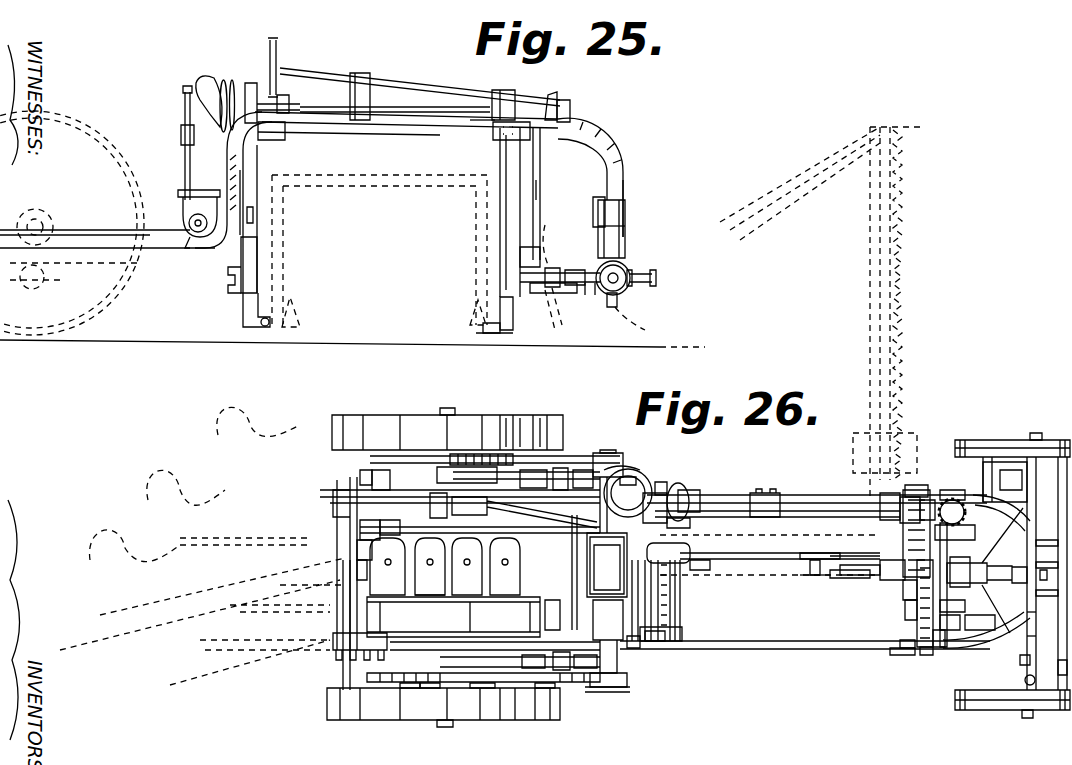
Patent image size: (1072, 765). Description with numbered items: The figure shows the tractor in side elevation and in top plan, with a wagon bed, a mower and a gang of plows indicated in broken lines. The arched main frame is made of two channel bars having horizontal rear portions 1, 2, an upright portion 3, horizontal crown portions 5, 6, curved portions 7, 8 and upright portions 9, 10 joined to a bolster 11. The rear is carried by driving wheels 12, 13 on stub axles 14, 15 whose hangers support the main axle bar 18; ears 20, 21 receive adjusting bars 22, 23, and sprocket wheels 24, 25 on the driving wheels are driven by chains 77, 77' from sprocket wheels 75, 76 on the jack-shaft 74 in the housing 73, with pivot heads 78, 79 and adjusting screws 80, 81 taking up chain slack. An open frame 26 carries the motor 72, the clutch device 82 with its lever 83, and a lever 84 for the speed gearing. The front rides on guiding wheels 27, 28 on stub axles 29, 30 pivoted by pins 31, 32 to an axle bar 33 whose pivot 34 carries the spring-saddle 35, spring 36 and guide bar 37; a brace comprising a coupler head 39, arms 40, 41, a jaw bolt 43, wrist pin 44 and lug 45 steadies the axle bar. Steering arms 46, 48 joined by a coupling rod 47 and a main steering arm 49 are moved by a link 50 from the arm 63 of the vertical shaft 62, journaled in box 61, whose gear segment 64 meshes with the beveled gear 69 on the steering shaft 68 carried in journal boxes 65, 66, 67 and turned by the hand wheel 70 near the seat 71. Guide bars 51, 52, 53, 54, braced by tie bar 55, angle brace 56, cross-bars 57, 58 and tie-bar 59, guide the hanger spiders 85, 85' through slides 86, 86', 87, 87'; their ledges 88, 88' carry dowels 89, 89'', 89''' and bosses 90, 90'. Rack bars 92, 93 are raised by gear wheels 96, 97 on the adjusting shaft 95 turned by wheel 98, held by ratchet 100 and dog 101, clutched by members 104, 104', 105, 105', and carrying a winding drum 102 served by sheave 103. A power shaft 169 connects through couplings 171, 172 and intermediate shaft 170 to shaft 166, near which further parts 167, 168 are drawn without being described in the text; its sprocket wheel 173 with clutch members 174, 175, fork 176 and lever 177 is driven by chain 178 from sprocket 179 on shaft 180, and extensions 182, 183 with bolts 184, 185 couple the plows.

In FIG. 25, the horizontal rear portion 1 is at (86, 232).
In FIG. 26, the horizontal rear portion 1 is at (412, 688).
In FIG. 26, the horizontal rear portion 2 is at (420, 490).
In FIG. 25, the upright portion 3 is at (226, 170).
In FIG. 26, the upright portion 3 is at (636, 650).
In FIG. 25, the horizontal crown portion 5 is at (388, 126).
In FIG. 26, the horizontal crown portion 5 is at (750, 650).
In FIG. 26, the horizontal crown portion 6 is at (792, 495).
In FIG. 25, the curved portion 7 is at (608, 152).
In FIG. 26, the curved portion 7 is at (1010, 645).
In FIG. 26, the curved portion 8 is at (1011, 485).
In FIG. 25, the upright portion 9 is at (623, 193).
In FIG. 26, the upright portion 9 is at (1036, 620).
In FIG. 26, the upright portion 10 is at (1015, 567).
In FIG. 25, the bolster 11 is at (593, 208).
In FIG. 26, the bolster 11 is at (1046, 550).
In FIG. 26, the driving wheel 12 is at (360, 720).
In FIG. 26, the driving wheel 13 is at (393, 416).
In FIG. 26, the stub axle 14 is at (445, 727).
In FIG. 26, the stub axle 15 is at (450, 408).
In FIG. 26, the main axle bar 18 is at (445, 626).
In FIG. 26, the ear 20 is at (482, 688).
In FIG. 26, the ear 21 is at (480, 456).
In FIG. 26, the adjusting bar 22 is at (545, 688).
In FIG. 26, the adjusting bar 23 is at (512, 454).
In FIG. 26, the sprocket wheel 24 is at (425, 688).
In FIG. 26, the sprocket wheel 25 is at (378, 470).
In FIG. 26, the open frame 26 is at (490, 657).
In FIG. 26, the guiding wheel 27 is at (975, 710).
In FIG. 26, the guiding wheel 28 is at (995, 440).
In FIG. 25, the stub axle 29 is at (622, 292).
In FIG. 26, the stub axle 29 is at (1026, 718).
In FIG. 26, the stub axle 30 is at (1041, 427).
In FIG. 25, the vertical pivot pin 31 is at (610, 307).
In FIG. 26, the vertical pivot pin 31 is at (1024, 680).
In FIG. 26, the vertical pivot pin 32 is at (1037, 480).
In FIG. 25, the axle bar 33 is at (620, 312).
In FIG. 26, the axle bar 33 is at (1020, 658).
In FIG. 26, the central horizontal pivot 34 is at (1046, 568).
In FIG. 26, the spring-saddle 35 is at (1049, 600).
In FIG. 25, the spring 36 is at (625, 240).
In FIG. 25, the guide bar 37 is at (598, 250).
In FIG. 26, the guide bar 37 is at (1015, 583).
In FIG. 25, the coupler head 39 is at (552, 268).
In FIG. 26, the coupler head 39 is at (961, 611).
In FIG. 25, the arm 40 is at (578, 268).
In FIG. 26, the arm 40 is at (985, 625).
In FIG. 26, the arm 41 is at (964, 565).
In FIG. 26, the jaw bolt 43 is at (942, 603).
In FIG. 25, the wrist pin 44 is at (550, 293).
In FIG. 26, the wrist pin 44 is at (910, 620).
In FIG. 25, the lug 45 is at (520, 278).
In FIG. 26, the lug 45 is at (905, 600).
In FIG. 25, the steering arm 46 is at (633, 283).
In FIG. 26, the steering arm 46 is at (1052, 665).
In FIG. 25, the coupling rod 47 is at (656, 278).
In FIG. 26, the coupling rod 47 is at (1036, 640).
In FIG. 26, the steering arm 48 is at (1060, 440).
In FIG. 25, the main steering arm 49 is at (597, 296).
In FIG. 26, the main steering arm 49 is at (1010, 460).
In FIG. 25, the link 50 is at (588, 296).
In FIG. 26, the link 50 is at (1005, 482).
In FIG. 25, the guide bar 51 is at (258, 252).
In FIG. 26, the guide bar 51 is at (682, 660).
In FIG. 25, the guide bar 52 is at (500, 240).
In FIG. 26, the guide bar 52 is at (925, 655).
In FIG. 26, the guide bar 53 is at (663, 482).
In FIG. 26, the guide bar 54 is at (928, 500).
In FIG. 25, the tie bar 55 is at (232, 292).
In FIG. 25, the angle brace 56 is at (255, 207).
In FIG. 26, the cross-bar 57 is at (680, 648).
In FIG. 26, the cross-bar 58 is at (905, 575).
In FIG. 25, the tie-bar 59 is at (520, 257).
In FIG. 26, the tie-bar 59 is at (960, 625).
In FIG. 25, the journal box 61 is at (540, 240).
In FIG. 25, the shaft 62 is at (535, 180).
In FIG. 25, the arm 63 is at (546, 300).
In FIG. 26, the arm 63 is at (965, 525).
In FIG. 25, the gear segment 64 is at (541, 140).
In FIG. 26, the gear segment 64 is at (955, 500).
In FIG. 25, the journal box 65 is at (570, 102).
In FIG. 26, the journal box 65 is at (950, 540).
In FIG. 25, the journal box 66 is at (360, 73).
In FIG. 26, the journal box 66 is at (758, 493).
In FIG. 25, the journal box 67 is at (502, 90).
In FIG. 26, the journal box 67 is at (908, 497).
In FIG. 25, the steering shaft 68 is at (420, 83).
In FIG. 26, the steering shaft 68 is at (815, 553).
In FIG. 25, the beveled gear wheel 69 is at (548, 95).
In FIG. 26, the beveled gear wheel 69 is at (955, 490).
In FIG. 25, the hand steering wheel 70 is at (270, 40).
In FIG. 26, the hand steering wheel 70 is at (683, 483).
In FIG. 25, the seat 71 is at (208, 84).
In FIG. 26, the seat 71 is at (641, 470).
In FIG. 26, the motor 72 is at (350, 580).
In FIG. 25, the housing 73 is at (182, 222).
In FIG. 26, the housing 73 is at (552, 612).
In FIG. 25, the jack-shaft 74 is at (194, 234).
In FIG. 26, the jack-shaft 74 is at (607, 450).
In FIG. 25, the sprocket wheel 75 is at (208, 248).
In FIG. 26, the sprocket wheel 75 is at (625, 686).
In FIG. 26, the sprocket wheel 76 is at (628, 477).
In FIG. 26, the sprocket chain 77 is at (483, 716).
In FIG. 26, the sprocket chain 77' is at (500, 436).
In FIG. 26, the pivot head 78 is at (630, 690).
In FIG. 26, the pivot head 79 is at (596, 453).
In FIG. 26, the adjusting screw 80 is at (562, 670).
In FIG. 26, the adjusting screw 81 is at (577, 470).
In FIG. 26, the clutch device 82 is at (515, 657).
In FIG. 26, the controlling lever 83 is at (505, 566).
In FIG. 25, the lever 84 is at (183, 88).
In FIG. 26, the lever 84 is at (607, 537).
In FIG. 26, the spider 85 is at (685, 600).
In FIG. 26, the spider 85' is at (854, 587).
In FIG. 25, the slide 86 is at (237, 317).
In FIG. 26, the slide 86 is at (660, 655).
In FIG. 26, the slide 86' is at (927, 455).
In FIG. 26, the slide 87 is at (702, 470).
In FIG. 25, the slide 87' is at (475, 303).
In FIG. 26, the slide 87' is at (949, 653).
In FIG. 25, the ledge 88 is at (352, 353).
In FIG. 26, the ledge 88 is at (697, 632).
In FIG. 25, the ledge 88' is at (500, 345).
In FIG. 26, the ledge 88' is at (865, 685).
In FIG. 25, the dowel 89 is at (282, 344).
In FIG. 26, the dowel 89 is at (687, 600).
In FIG. 26, the projection 89'' is at (855, 536).
In FIG. 25, the projection 89''' is at (475, 354).
In FIG. 26, the projection 89''' is at (884, 675).
In FIG. 25, the boss 90 is at (295, 300).
In FIG. 25, the boss 90' is at (454, 312).
In FIG. 25, the rack bar 92 is at (250, 83).
In FIG. 26, the rack bar 92 is at (608, 631).
In FIG. 25, the rack bar 93 is at (500, 138).
In FIG. 26, the rack bar 93 is at (816, 575).
In FIG. 25, the adjusting and supporting shaft 95 is at (388, 104).
In FIG. 26, the adjusting and supporting shaft 95 is at (795, 550).
In FIG. 26, the gear wheel 96 is at (655, 590).
In FIG. 26, the gear wheel 97 is at (850, 565).
In FIG. 25, the controlling wheel 98 is at (230, 82).
In FIG. 26, the controlling wheel 98 is at (607, 567).
In FIG. 26, the ratchet wheel 100 is at (692, 550).
In FIG. 25, the dog 101 is at (289, 100).
In FIG. 26, the dog 101 is at (710, 567).
In FIG. 25, the winding drum 102 is at (395, 103).
In FIG. 26, the winding drum 102 is at (810, 578).
In FIG. 26, the guide sheave 103 is at (885, 495).
In FIG. 25, the clutch member 104 is at (286, 140).
In FIG. 25, the clutch member 104' is at (458, 145).
In FIG. 25, the clutch member 105 is at (239, 96).
In FIG. 25, the clutch member 105' is at (554, 190).
In FIG. 26, the clutch member 105' is at (985, 585).
In FIG. 26, the shaft 166 is at (667, 500).
In FIG. 26, the arc 167 is at (645, 472).
In FIG. 26, the block 168 is at (690, 523).
In FIG. 26, the shaft 169 is at (434, 566).
In FIG. 26, the intermediate shaft 170 is at (471, 566).
In FIG. 26, the universal coupling 171 is at (435, 580).
In FIG. 26, the universal coupling 172 is at (560, 500).
In FIG. 26, the sprocket wheel 173 is at (345, 510).
In FIG. 26, the clutch member 174 is at (350, 545).
In FIG. 26, the clutch member 175 is at (350, 555).
In FIG. 26, the fork 176 is at (390, 566).
In FIG. 26, the controlling lever 177 is at (366, 470).
In FIG. 26, the sprocket chain 178 is at (350, 515).
In FIG. 26, the sprocket wheel 179 is at (345, 605).
In FIG. 26, the shaft 180 is at (345, 575).
In FIG. 26, the upward extension 182 is at (335, 642).
In FIG. 26, the upward extension 183 is at (320, 497).
In FIG. 26, the securing bolt 184 is at (348, 660).
In FIG. 26, the securing bolt 185 is at (325, 456).